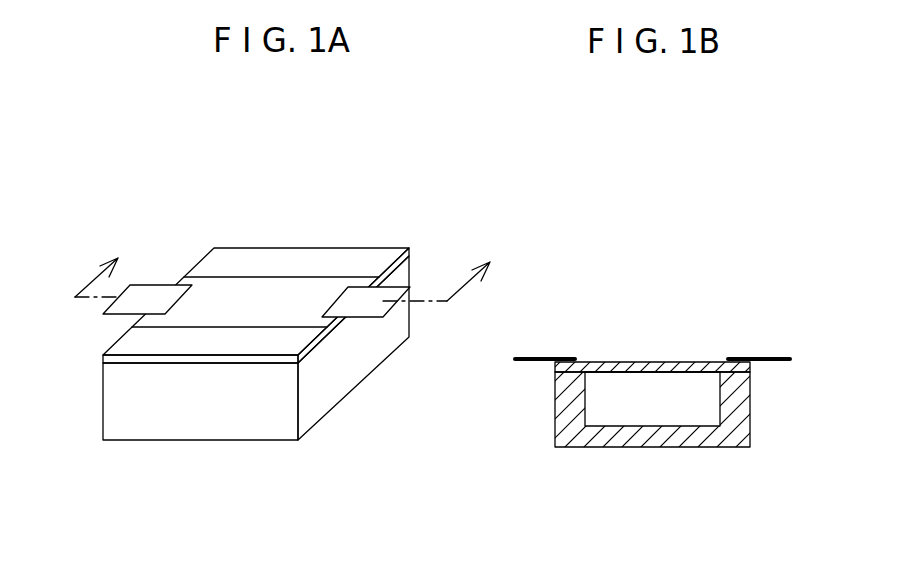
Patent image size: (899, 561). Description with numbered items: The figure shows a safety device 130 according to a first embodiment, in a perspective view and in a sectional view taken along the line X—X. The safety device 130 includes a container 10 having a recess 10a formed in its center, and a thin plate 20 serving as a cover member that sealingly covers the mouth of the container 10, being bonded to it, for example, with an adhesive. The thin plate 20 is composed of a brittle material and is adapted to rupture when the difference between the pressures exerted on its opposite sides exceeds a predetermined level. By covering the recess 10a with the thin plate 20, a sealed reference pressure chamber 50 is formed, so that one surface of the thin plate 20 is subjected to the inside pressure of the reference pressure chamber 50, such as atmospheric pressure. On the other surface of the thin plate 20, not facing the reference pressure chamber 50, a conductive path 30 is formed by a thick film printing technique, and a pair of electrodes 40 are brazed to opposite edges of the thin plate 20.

In FIG. 1A, the container 10 is at (318, 402).
In FIG. 1B, the container 10 is at (680, 440).
In FIG. 1B, the recess 10a is at (607, 425).
In FIG. 1A, the thin plate 20 is at (135, 343).
In FIG. 1B, the thin plate 20 is at (644, 372).
In FIG. 1A, the conductive path 30 is at (279, 299).
In FIG. 1A, the electrodes 40 is at (164, 299).
In FIG. 1B, the electrodes 40 is at (540, 358).
In FIG. 1B, the reference pressure chamber 50 is at (705, 398).
In FIG. 1A, the safety device 130 is at (413, 155).
In FIG. 1B, the safety device 130 is at (753, 243).